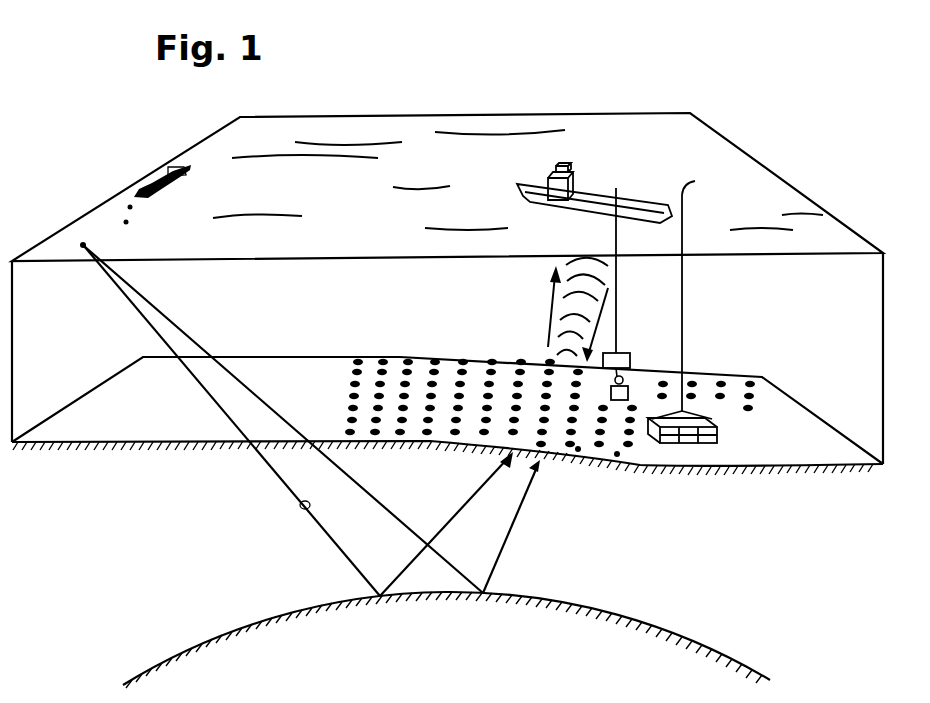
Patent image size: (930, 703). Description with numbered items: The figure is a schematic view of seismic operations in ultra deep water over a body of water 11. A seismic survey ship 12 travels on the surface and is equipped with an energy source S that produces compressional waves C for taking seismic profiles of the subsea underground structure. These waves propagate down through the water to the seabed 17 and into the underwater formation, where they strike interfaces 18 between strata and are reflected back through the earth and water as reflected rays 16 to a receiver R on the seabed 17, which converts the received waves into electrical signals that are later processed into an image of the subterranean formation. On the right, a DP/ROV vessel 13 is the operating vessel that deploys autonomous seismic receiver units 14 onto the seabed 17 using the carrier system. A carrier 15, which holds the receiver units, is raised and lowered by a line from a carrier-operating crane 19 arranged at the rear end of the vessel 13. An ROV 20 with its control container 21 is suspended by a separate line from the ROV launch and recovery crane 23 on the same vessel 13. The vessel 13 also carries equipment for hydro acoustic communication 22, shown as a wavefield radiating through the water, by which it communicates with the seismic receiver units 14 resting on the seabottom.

The body of water 11 is at (812, 201).
The seismic survey ship 12 is at (160, 183).
The DP/ROV vessel 13 is at (585, 182).
The seismic receiver units 14 is at (618, 456).
The carrier 15 is at (720, 420).
The reflected seismic rays 16 is at (505, 538).
The seabed 17 is at (288, 365).
The interfaces 18 is at (688, 638).
The carrier-operating crane 19 is at (695, 181).
The ROV 20 is at (634, 379).
The control container 21 is at (622, 351).
The hydro acoustic communication 22 is at (548, 315).
The ROV launch and recovery crane 23 is at (622, 193).
The energy source S is at (279, 409).
The receiver R is at (578, 453).
The compressional waves C is at (300, 511).